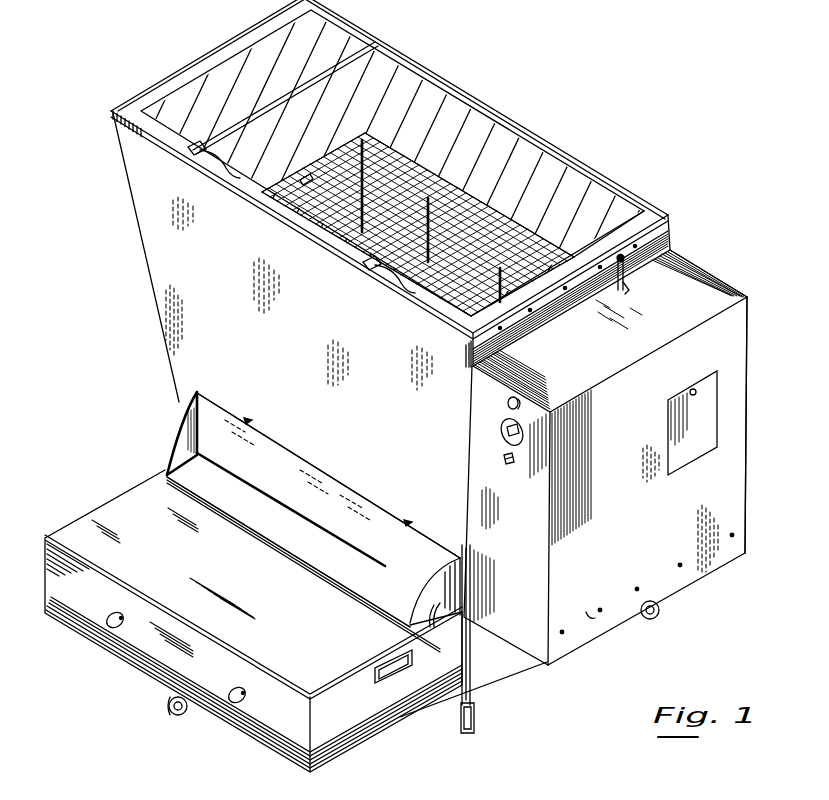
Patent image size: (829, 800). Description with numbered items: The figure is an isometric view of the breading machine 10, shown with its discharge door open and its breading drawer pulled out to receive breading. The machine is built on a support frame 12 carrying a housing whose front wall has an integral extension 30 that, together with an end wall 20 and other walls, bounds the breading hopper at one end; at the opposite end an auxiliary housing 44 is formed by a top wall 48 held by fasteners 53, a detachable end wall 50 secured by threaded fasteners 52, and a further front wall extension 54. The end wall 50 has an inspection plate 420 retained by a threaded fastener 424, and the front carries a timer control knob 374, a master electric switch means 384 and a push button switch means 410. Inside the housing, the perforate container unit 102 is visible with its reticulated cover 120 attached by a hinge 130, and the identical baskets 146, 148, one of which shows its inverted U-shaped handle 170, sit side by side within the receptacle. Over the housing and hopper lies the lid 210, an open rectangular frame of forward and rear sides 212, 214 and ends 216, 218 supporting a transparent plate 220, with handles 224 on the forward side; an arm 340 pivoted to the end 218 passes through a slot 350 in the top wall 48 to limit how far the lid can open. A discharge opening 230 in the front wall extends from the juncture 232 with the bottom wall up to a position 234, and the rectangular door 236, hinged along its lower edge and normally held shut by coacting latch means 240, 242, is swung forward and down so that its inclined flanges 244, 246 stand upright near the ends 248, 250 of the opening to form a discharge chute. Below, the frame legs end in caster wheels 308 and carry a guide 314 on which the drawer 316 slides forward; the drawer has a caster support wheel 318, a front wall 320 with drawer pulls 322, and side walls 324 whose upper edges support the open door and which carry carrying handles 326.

The breading machine 10 is at (727, 256).
The support frame 12 is at (478, 641).
The end wall 20 is at (392, 65).
The extension 30 is at (148, 212).
The auxiliary housing 44 is at (738, 358).
The top wall 48 is at (717, 300).
The end wall 50 is at (727, 508).
The threaded fasteners 52 is at (590, 618).
The fasteners 53 is at (570, 300).
The extension 54 is at (523, 530).
The container unit 102 is at (462, 200).
The cover 120 is at (330, 160).
The hinge 130 is at (400, 175).
The basket 146 is at (556, 252).
The basket 148 is at (305, 177).
The handle 170 is at (428, 183).
The lid 210 is at (622, 195).
The forward side 212 is at (300, 232).
The rear side 214 is at (507, 121).
The end 216 is at (257, 30).
The end 218 is at (678, 228).
The transparent plate 220 is at (455, 95).
The handles 224 is at (196, 158).
The opening 230 is at (333, 503).
The juncture 232 is at (395, 530).
The position 234 is at (307, 467).
The door 236 is at (305, 577).
The latch means 240 is at (198, 503).
The latch means 242 is at (247, 420).
The flange 244 is at (172, 453).
The flange 246 is at (440, 605).
The end of opening 248 is at (197, 393).
The end of opening 250 is at (473, 568).
The caster wheels 308 is at (665, 610).
The guide 314 is at (500, 667).
The drawer 316 is at (85, 513).
The caster support wheel 318 is at (168, 706).
The front wall 320 is at (78, 605).
The drawer pulls 322 is at (232, 688).
The side walls 324 is at (142, 530).
The carrying handles 326 is at (387, 680).
The arm 340 is at (626, 283).
The slot 350 is at (624, 288).
The control knob 374 is at (503, 430).
The electric switch means 384 is at (503, 456).
The push button switch means 410 is at (506, 404).
The inspection plate 420 is at (700, 423).
The threaded fastener 424 is at (691, 389).